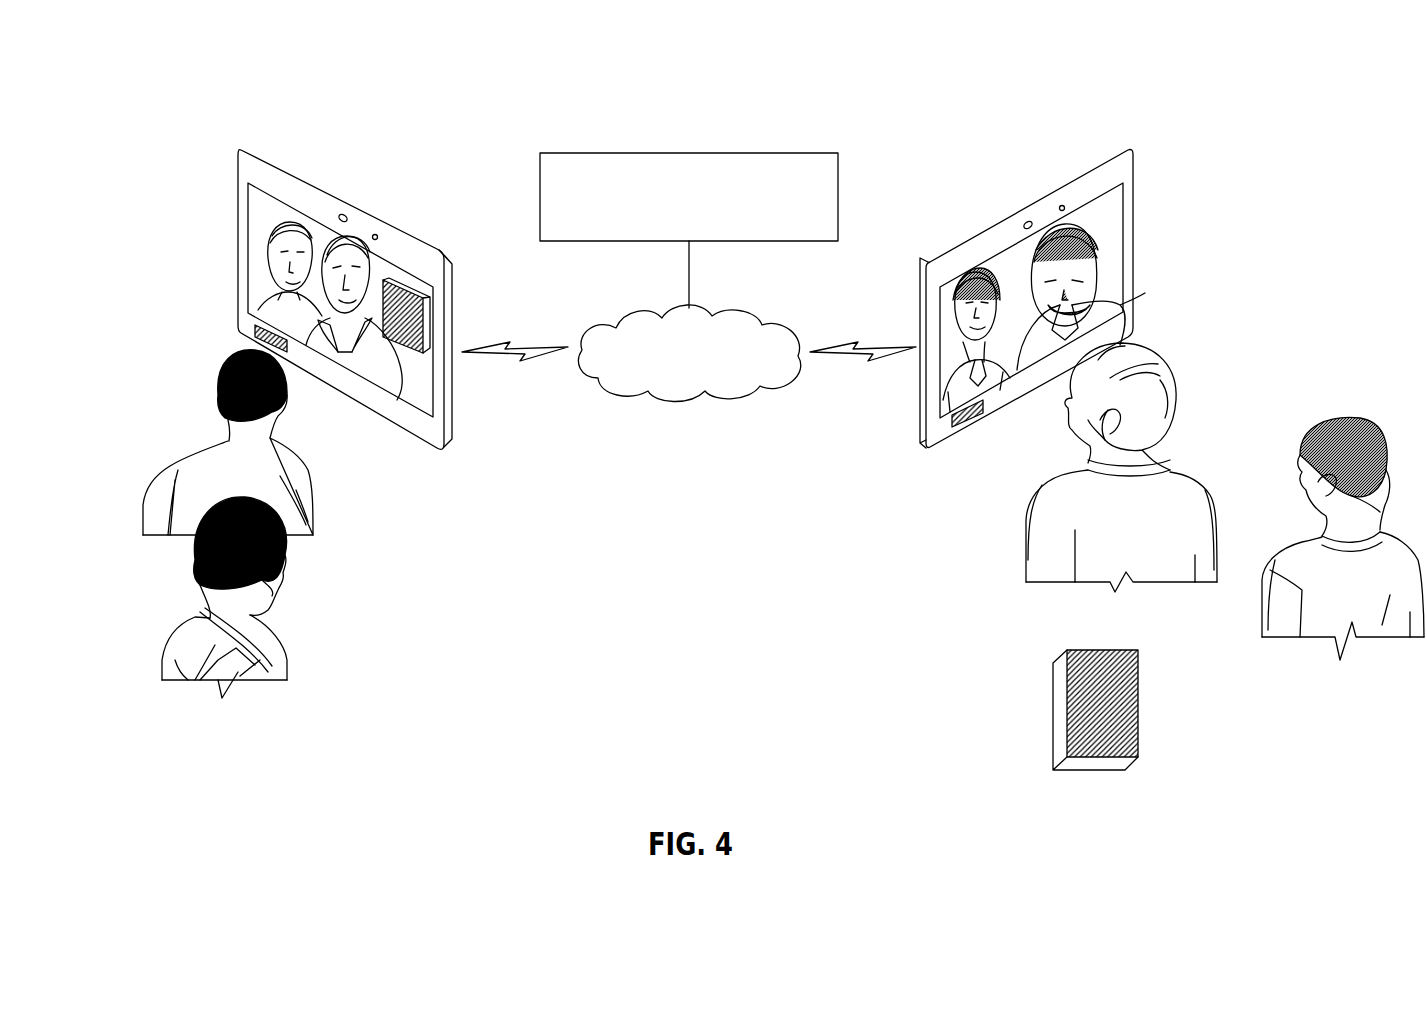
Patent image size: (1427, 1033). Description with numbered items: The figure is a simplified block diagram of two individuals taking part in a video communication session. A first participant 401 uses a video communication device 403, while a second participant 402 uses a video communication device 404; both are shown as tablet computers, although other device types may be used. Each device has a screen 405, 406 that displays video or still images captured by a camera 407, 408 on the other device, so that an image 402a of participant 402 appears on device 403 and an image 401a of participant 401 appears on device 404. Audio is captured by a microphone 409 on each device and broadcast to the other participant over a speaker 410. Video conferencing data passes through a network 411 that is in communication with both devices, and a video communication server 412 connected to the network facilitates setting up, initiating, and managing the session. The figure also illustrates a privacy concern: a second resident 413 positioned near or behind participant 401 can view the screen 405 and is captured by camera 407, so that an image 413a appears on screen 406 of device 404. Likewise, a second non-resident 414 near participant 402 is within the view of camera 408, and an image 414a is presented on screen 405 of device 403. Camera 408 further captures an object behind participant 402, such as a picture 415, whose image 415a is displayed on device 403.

The participant 401 is at (192, 442).
The image of participant 401a is at (1103, 312).
The participant 402 is at (1045, 545).
The image of participant 402a is at (373, 370).
The video communication device 403 is at (226, 238).
The video communication device 404 is at (1145, 235).
The screen 405 is at (256, 209).
The screen 406 is at (948, 321).
The camera 407 is at (345, 215).
The camera 408 is at (1026, 222).
The microphone 409 is at (375, 234).
The speaker 410 is at (272, 338).
The network 411 is at (710, 367).
The video communication server 412 is at (613, 152).
The second resident 413 is at (185, 630).
The image of second resident 413a is at (943, 398).
The second non-resident 414 is at (1267, 620).
The image of second non-resident 414a is at (263, 302).
The picture 415 is at (1058, 707).
The image of picture 415a is at (422, 320).